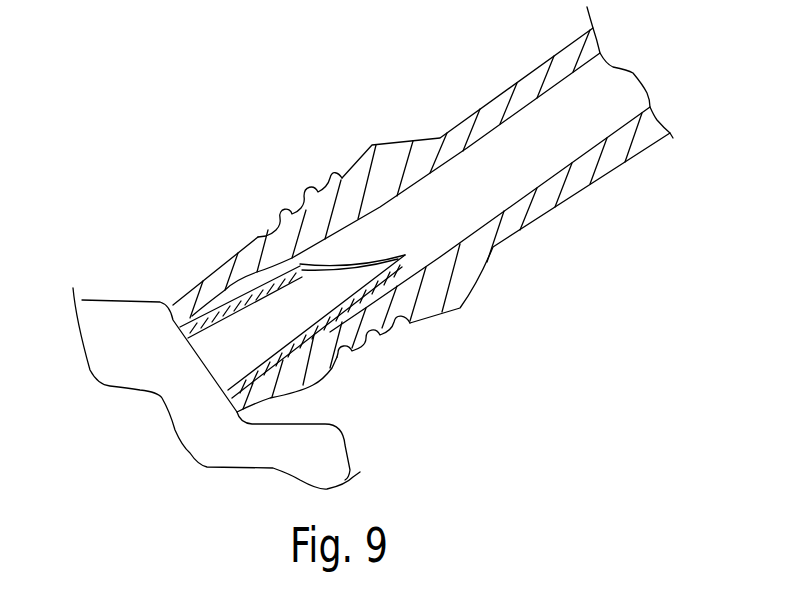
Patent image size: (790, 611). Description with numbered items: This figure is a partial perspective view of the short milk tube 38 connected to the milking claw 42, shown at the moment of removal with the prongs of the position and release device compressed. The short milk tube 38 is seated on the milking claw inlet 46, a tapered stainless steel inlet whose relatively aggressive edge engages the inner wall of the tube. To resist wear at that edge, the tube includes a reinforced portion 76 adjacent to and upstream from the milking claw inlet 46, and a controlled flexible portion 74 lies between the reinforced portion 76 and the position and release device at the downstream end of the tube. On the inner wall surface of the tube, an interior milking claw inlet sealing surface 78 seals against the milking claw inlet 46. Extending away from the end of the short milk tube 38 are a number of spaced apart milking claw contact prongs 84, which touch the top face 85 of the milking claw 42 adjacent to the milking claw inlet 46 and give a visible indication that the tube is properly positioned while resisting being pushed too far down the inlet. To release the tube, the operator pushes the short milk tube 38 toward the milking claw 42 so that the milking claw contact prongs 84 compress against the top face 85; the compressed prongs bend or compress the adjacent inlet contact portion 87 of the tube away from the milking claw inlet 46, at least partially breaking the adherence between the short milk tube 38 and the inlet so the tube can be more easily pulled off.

The short milk tube 38 is at (423, 218).
The milking claw 42 is at (239, 349).
The milking claw inlet 46 is at (277, 341).
The controlled flexible portion 74 is at (302, 208).
The reinforced portion 76 is at (386, 160).
The interior milking claw inlet sealing surface 78 is at (387, 203).
The milking claw contact prongs 84 is at (183, 303).
The top face of the milking claw 85 is at (170, 300).
The inlet contact portion 87 is at (244, 268).